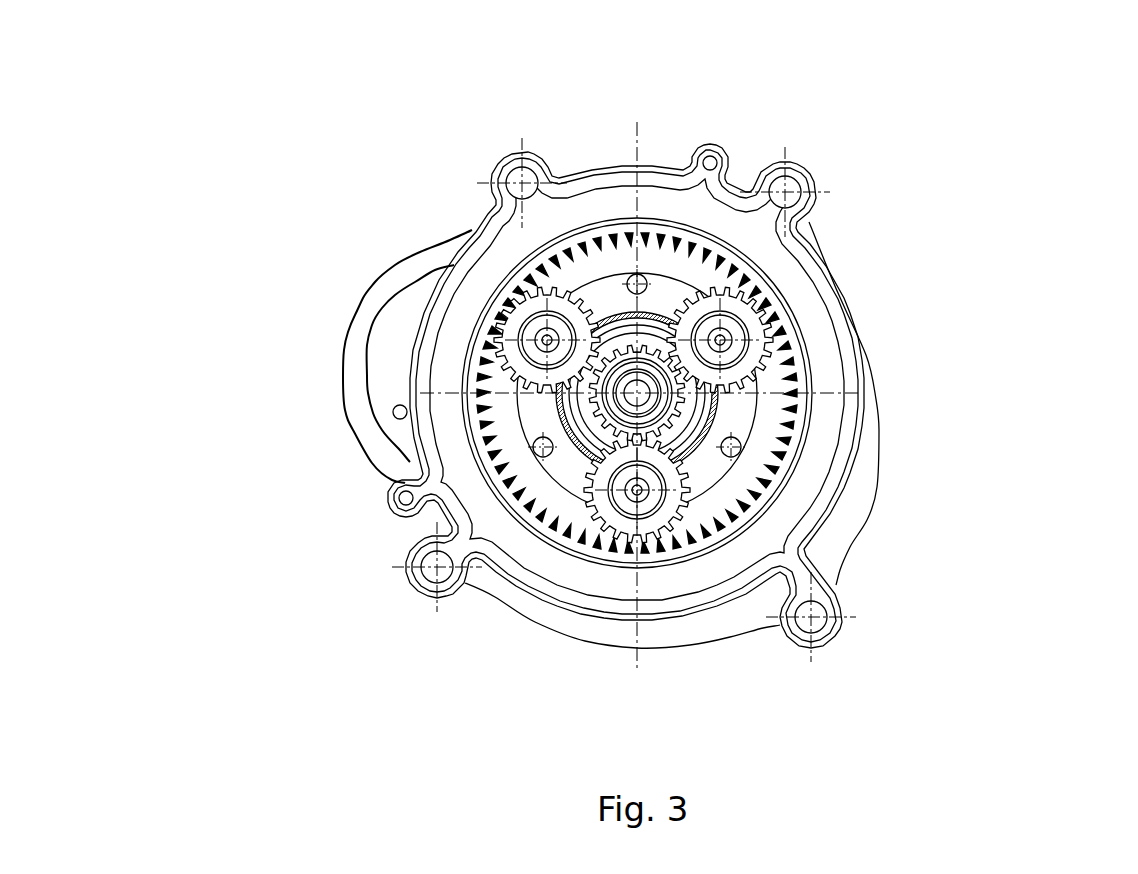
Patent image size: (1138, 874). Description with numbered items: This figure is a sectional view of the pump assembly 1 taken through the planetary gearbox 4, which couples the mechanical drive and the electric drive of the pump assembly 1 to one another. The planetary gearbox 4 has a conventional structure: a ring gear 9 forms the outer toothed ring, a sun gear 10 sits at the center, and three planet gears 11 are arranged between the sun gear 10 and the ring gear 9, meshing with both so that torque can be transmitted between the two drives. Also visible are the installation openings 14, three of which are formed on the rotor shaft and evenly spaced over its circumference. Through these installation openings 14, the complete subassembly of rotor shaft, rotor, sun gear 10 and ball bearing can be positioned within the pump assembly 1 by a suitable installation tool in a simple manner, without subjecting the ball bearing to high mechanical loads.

The pump assembly 1 is at (192, 130).
The planetary gearbox 4 is at (192, 130).
The ring gear 9 is at (787, 443).
The sun gear 10 is at (655, 405).
The planet gears 11 is at (785, 325).
The installation openings 14 is at (628, 345).